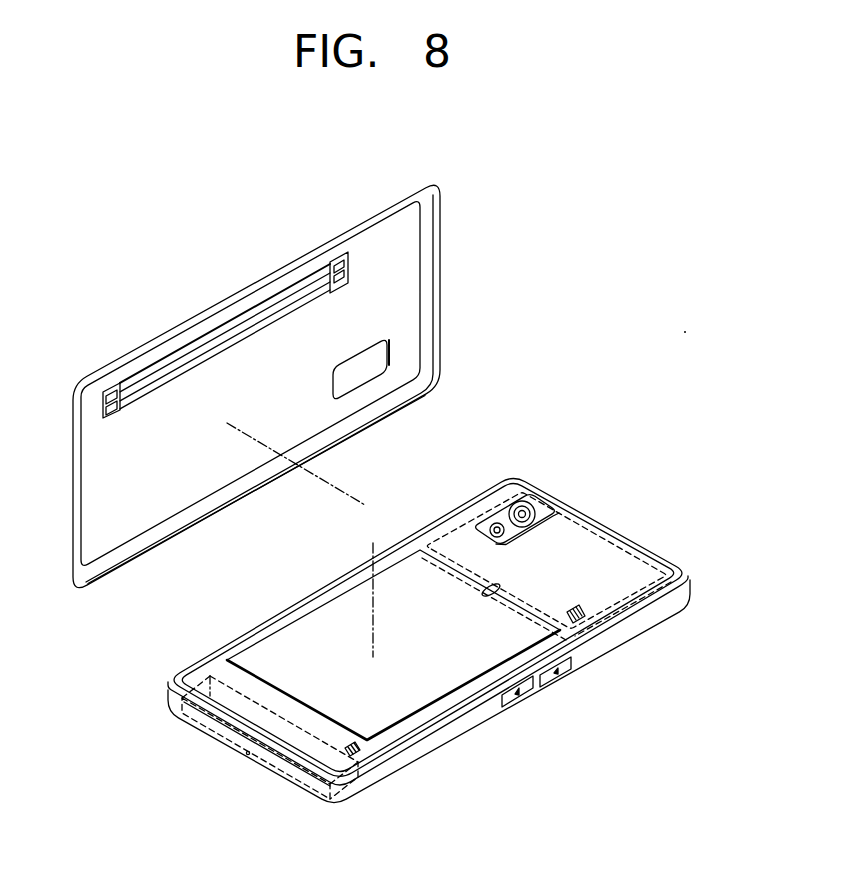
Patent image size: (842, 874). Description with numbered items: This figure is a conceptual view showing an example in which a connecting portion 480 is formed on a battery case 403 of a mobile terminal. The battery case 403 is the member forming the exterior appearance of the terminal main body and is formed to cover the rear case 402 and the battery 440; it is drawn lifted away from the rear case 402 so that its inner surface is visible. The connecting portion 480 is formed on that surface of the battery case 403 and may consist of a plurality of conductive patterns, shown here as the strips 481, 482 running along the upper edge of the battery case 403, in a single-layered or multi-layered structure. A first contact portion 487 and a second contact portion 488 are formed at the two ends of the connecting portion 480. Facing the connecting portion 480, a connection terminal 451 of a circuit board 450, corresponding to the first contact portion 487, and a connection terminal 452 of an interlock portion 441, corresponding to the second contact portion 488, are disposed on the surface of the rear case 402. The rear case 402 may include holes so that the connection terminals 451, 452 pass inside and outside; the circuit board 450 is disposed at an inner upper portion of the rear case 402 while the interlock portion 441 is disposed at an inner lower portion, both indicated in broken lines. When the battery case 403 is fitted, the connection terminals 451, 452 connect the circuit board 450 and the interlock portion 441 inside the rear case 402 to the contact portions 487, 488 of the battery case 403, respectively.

The rear case 402 is at (638, 548).
The battery case 403 is at (428, 285).
The battery 440 is at (420, 700).
The interlock portion 441 is at (205, 686).
The circuit board 450 is at (585, 530).
The connection terminal 451 is at (593, 623).
The connection terminal 452 is at (358, 750).
The connecting portion 480 is at (210, 289).
The first antenna radiator 481 is at (172, 357).
The second antenna radiator 482 is at (255, 327).
The first contact portion 487 is at (326, 238).
The second contact portion 488 is at (109, 388).